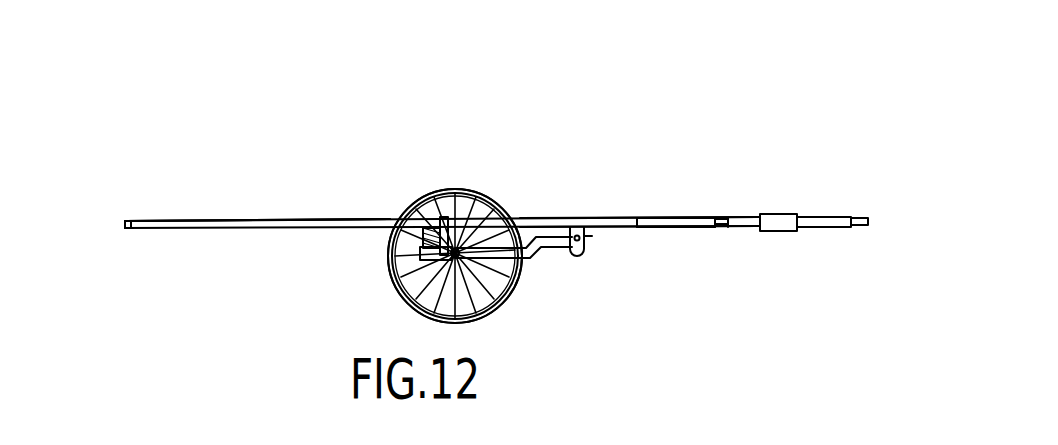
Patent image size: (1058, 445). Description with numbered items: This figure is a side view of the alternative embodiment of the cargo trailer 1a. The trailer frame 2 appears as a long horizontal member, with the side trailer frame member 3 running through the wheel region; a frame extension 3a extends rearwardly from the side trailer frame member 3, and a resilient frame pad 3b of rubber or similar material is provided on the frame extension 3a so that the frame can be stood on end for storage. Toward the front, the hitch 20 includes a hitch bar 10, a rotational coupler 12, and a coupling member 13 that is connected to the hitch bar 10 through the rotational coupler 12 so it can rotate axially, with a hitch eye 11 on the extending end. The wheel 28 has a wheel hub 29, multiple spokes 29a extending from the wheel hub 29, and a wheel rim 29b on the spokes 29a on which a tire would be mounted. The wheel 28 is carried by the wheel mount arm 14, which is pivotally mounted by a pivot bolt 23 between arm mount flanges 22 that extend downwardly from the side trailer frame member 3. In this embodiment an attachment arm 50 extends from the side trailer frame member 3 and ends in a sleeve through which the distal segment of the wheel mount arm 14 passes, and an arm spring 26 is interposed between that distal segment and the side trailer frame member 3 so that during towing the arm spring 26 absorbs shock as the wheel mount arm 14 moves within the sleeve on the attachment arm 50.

The cargo trailer 1a is at (374, 98).
The trailer frame 2 is at (338, 236).
The side trailer frame member 3 is at (225, 229).
The frame extension 3a is at (142, 220).
The resilient frame pad 3b is at (125, 228).
The hitch bar 10 is at (736, 217).
The hitch eye 11 is at (866, 217).
The rotational coupler 12 is at (785, 224).
The coupling member 13 is at (820, 216).
The wheel mount arm 14 is at (550, 265).
The hitch 20 is at (744, 240).
The arm mount flange 22 is at (588, 236).
The pivot bolt 23 is at (578, 236).
The arm spring 26 is at (423, 232).
The wheel 28 is at (492, 184).
The wheel hub 29 is at (452, 196).
The spokes 29a is at (426, 290).
The wheel rim 29b is at (486, 307).
The attachment arm 50 is at (440, 218).